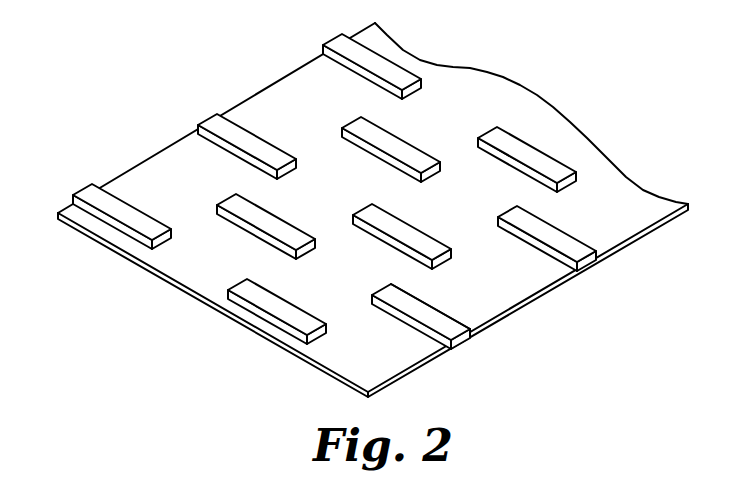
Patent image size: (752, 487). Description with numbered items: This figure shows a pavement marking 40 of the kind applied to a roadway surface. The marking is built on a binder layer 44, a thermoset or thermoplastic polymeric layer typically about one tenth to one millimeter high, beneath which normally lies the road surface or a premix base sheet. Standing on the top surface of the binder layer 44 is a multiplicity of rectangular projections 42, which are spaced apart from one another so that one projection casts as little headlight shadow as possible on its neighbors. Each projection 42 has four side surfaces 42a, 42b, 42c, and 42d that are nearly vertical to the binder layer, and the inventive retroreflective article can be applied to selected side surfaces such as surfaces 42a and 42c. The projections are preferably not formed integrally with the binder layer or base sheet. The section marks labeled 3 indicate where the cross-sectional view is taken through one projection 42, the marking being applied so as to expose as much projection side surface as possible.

The pavement marking 40 is at (373, 205).
The binder layer 44 is at (633, 200).
The projections 42 is at (592, 267).
The side surface 42a is at (436, 305).
The side surface 42b is at (461, 338).
The side surface 42c is at (398, 313).
The side surface 42d is at (382, 287).
The section line 3- 3 is at (287, 118).